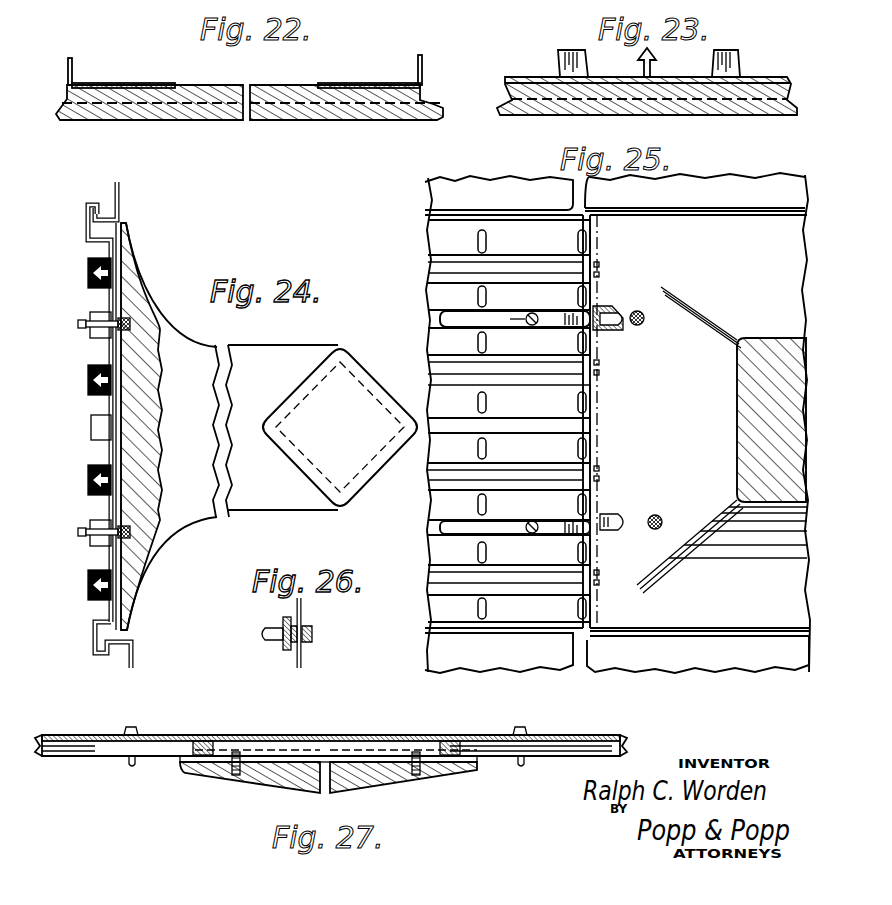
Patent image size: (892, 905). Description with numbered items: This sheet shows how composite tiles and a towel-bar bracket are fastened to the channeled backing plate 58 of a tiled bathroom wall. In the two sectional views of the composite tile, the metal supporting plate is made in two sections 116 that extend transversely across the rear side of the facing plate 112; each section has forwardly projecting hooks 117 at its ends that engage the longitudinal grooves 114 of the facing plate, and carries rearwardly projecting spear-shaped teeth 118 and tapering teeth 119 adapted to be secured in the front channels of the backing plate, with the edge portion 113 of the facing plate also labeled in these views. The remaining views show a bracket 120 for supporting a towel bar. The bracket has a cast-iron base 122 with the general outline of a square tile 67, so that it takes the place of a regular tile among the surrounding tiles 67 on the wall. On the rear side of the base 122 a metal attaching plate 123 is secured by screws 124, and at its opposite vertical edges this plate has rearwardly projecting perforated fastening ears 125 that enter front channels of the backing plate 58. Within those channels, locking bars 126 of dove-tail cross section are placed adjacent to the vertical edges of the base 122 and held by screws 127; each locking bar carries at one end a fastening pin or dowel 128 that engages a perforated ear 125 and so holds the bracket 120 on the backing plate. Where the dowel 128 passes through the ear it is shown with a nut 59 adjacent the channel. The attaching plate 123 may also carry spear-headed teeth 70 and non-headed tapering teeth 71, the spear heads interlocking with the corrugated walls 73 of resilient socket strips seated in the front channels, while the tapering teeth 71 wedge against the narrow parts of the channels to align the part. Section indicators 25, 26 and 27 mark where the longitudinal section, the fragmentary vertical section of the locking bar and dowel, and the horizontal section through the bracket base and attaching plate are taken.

In FIG. 24, the section line 25 is at (200, 665).
In FIG. 25, the section line 26 is at (508, 293).
In FIG. 24, the section line 27 is at (430, 318).
In FIG. 25, the section line 27 is at (680, 316).
In FIG. 24, the backing plate 58 is at (115, 184).
In FIG. 25, the backing plate 58 is at (458, 614).
In FIG. 26, the backing plate 58 is at (305, 644).
In FIG. 27, the backing plate 58 is at (72, 741).
In FIG. 24, the nut 59 is at (98, 260).
In FIG. 25, the nut 59 is at (637, 311).
In FIG. 26, the nut 59 is at (286, 650).
In FIG. 24, the square tile 67 is at (120, 202).
In FIG. 25, the square tile 67 is at (617, 423).
In FIG. 24, the spear-headed tooth 70 is at (111, 273).
In FIG. 25, the spear-headed tooth 70 is at (603, 580).
In FIG. 24, the non-headed tooth 71 is at (150, 416).
In FIG. 24, the resilient socket strip wall 73 is at (93, 590).
In FIG. 22, the facing plate 112 is at (243, 120).
In FIG. 23, the facing plate 112 is at (752, 115).
In FIG. 22, the edge flange 113 is at (62, 112).
In FIG. 23, the edge flange 113 is at (810, 9).
In FIG. 23, the longitudinal groove 114 is at (500, 113).
In FIG. 22, the supporting plate section 116 is at (145, 76).
In FIG. 23, the supporting plate section 116 is at (665, 78).
In FIG. 23, the hook 117 is at (504, 88).
In FIG. 22, the spear-shaped tooth 118 is at (68, 64).
In FIG. 23, the spear-shaped tooth 118 is at (640, 55).
In FIG. 23, the tapering tooth 119 is at (558, 56).
In FIG. 24, the bracket 120 is at (219, 518).
In FIG. 25, the bracket 120 is at (737, 445).
In FIG. 24, the bracket base 122 is at (128, 248).
In FIG. 25, the bracket base 122 is at (700, 423).
In FIG. 24, the attaching plate 123 is at (122, 305).
In FIG. 27, the attaching plate 123 is at (340, 760).
In FIG. 24, the screw 124 is at (125, 330).
In FIG. 25, the screw 124 is at (666, 518).
In FIG. 26, the screw 124 is at (312, 636).
In FIG. 27, the screw 124 is at (236, 776).
In FIG. 24, the fastening ear 125 is at (93, 334).
In FIG. 25, the fastening ear 125 is at (603, 307).
In FIG. 27, the fastening ear 125 is at (185, 763).
In FIG. 25, the locking bar 126 is at (460, 318).
In FIG. 26, the locking bar 126 is at (289, 618).
In FIG. 27, the locking bar 126 is at (80, 758).
In FIG. 25, the screw 127 is at (534, 534).
In FIG. 27, the screw 127 is at (131, 766).
In FIG. 24, the fastening pin 128 is at (90, 323).
In FIG. 25, the fastening pin 128 is at (612, 330).
In FIG. 27, the fastening pin 128 is at (205, 741).